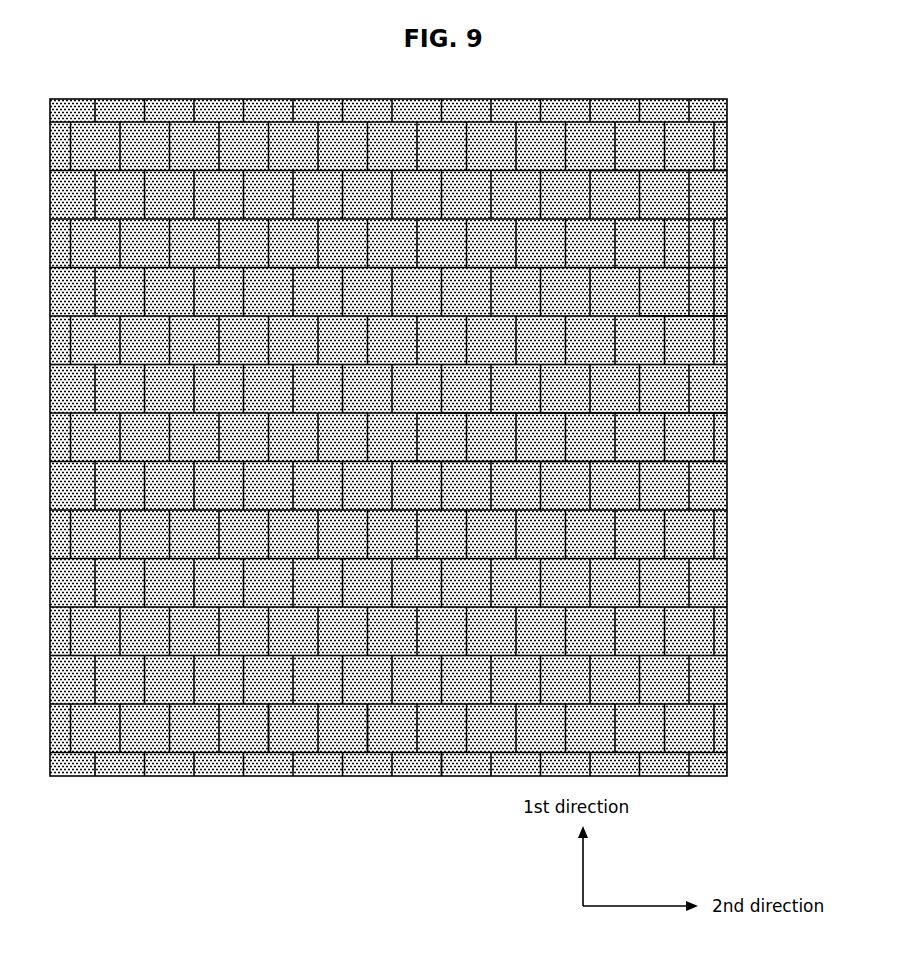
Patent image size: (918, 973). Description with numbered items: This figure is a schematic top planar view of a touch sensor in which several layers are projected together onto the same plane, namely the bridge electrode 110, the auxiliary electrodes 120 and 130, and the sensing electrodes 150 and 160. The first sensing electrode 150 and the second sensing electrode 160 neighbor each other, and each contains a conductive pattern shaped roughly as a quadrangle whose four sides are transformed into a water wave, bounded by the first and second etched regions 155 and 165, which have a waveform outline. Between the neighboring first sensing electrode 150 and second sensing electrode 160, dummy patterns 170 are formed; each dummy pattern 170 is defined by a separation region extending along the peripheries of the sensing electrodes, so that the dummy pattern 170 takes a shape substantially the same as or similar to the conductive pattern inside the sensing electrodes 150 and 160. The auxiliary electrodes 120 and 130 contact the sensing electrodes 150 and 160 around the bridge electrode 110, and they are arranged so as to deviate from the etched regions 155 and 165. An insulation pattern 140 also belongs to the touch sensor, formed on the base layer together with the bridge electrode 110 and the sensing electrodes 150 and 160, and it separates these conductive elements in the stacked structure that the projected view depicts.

The bridge electrode 110 is at (410, 470).
The auxiliary electrode 120 is at (292, 748).
The auxiliary electrode 130 is at (703, 232).
The insulation pattern 140 is at (420, 437).
The first sensing electrode 150 is at (442, 748).
The first etched region 155 is at (372, 748).
The second sensing electrode 160 is at (710, 287).
The second etched region 165 is at (655, 323).
The dummy pattern 170 is at (600, 183).